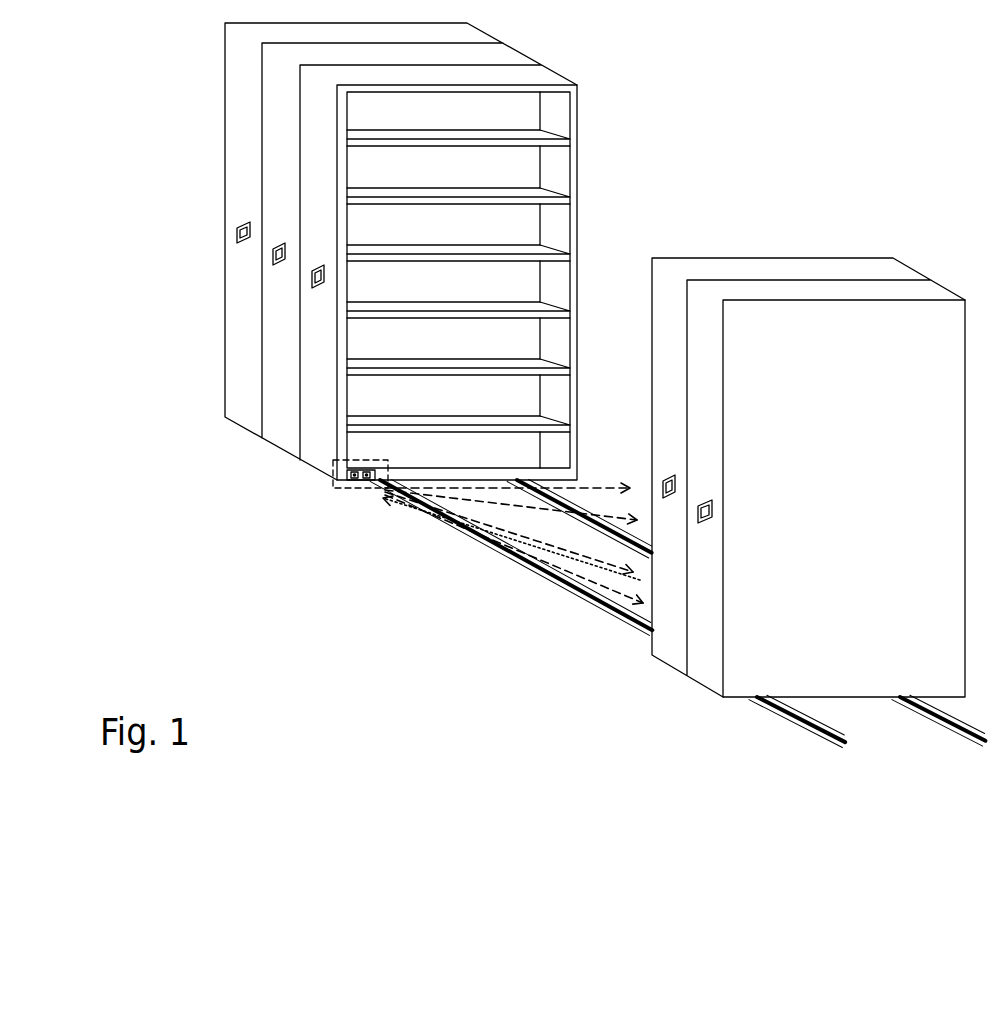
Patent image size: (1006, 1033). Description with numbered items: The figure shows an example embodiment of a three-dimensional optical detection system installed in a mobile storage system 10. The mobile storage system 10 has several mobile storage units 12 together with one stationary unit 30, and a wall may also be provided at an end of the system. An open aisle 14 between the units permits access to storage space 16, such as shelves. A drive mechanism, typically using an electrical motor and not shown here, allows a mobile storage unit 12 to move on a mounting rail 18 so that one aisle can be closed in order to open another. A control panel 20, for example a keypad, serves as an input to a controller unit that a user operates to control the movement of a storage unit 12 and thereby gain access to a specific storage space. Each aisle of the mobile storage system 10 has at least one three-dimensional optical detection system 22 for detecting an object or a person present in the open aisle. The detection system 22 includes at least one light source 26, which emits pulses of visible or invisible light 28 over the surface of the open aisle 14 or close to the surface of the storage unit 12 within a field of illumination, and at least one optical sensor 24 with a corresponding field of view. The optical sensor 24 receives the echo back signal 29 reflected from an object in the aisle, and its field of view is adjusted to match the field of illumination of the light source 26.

The mobile storage system 10 is at (210, 58).
The mobile storage unit 12 is at (283, 432).
The open aisle 14 is at (565, 530).
The storage space 16 is at (542, 193).
The mounting rail 18 is at (620, 615).
The control panel 20 is at (240, 232).
The 3D optical detection system 22 is at (333, 485).
The optical sensor 24 is at (350, 481).
The light source 26 is at (363, 481).
The light pulses 28 is at (505, 523).
The echo back signal 29 is at (556, 553).
The stationary unit 30 is at (242, 405).